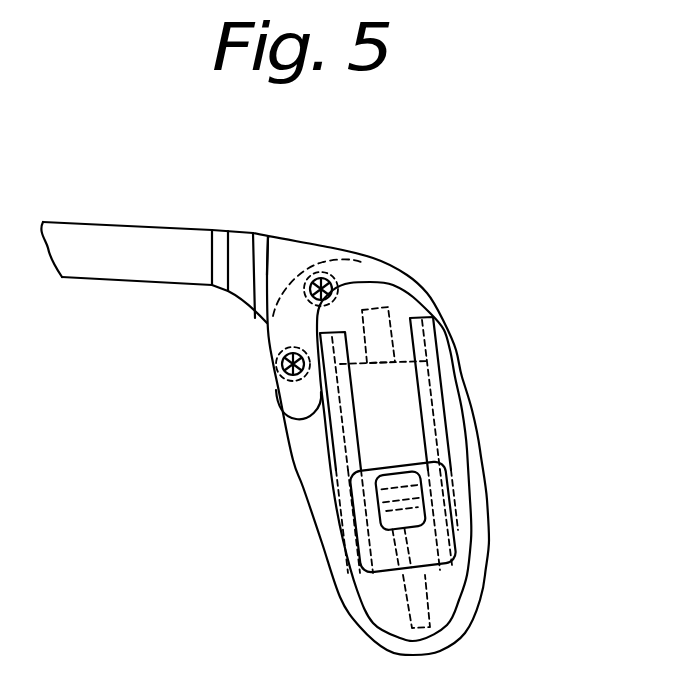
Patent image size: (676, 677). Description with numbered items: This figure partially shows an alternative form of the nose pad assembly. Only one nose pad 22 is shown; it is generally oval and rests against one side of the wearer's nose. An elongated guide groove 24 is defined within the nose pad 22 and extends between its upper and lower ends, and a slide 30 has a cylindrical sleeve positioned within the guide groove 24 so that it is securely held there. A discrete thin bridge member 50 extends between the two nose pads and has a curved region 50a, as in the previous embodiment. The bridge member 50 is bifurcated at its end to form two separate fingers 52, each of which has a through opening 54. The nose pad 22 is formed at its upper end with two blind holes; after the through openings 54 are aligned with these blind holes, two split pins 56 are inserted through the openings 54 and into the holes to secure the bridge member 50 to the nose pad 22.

The nose pad 22 is at (479, 472).
The guide groove 24 is at (426, 390).
The slide 30 is at (421, 533).
The bridge member 50 is at (80, 240).
The curved region 50a is at (253, 255).
The finger 52 is at (360, 285).
The through opening 54 is at (322, 272).
The split pin 56 is at (312, 294).